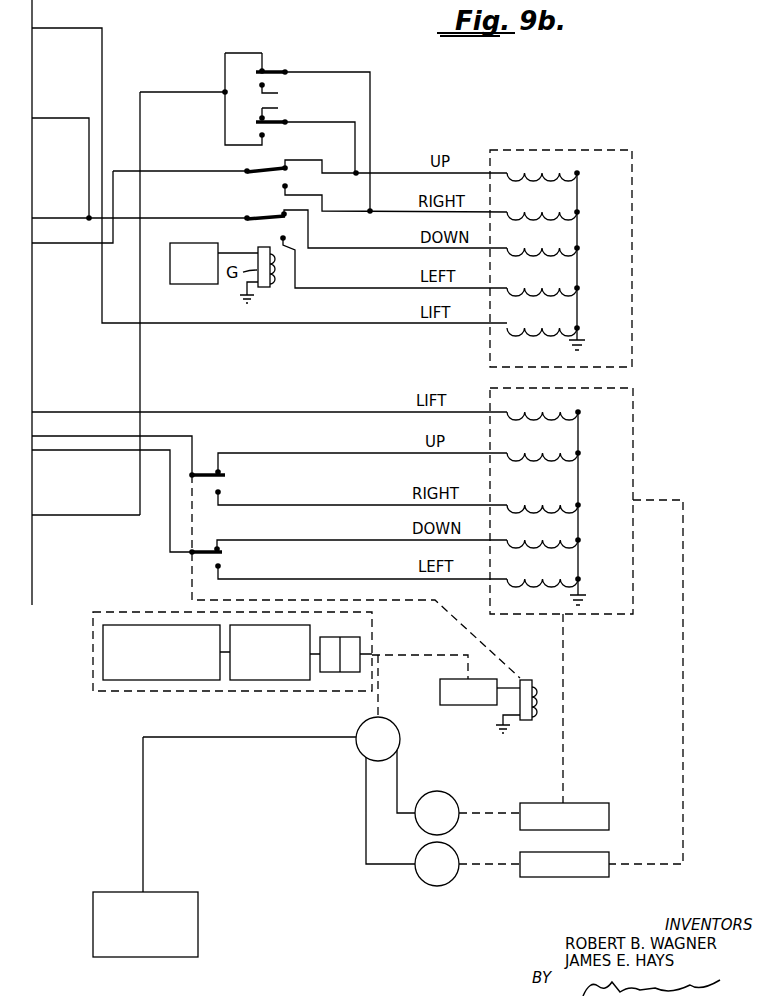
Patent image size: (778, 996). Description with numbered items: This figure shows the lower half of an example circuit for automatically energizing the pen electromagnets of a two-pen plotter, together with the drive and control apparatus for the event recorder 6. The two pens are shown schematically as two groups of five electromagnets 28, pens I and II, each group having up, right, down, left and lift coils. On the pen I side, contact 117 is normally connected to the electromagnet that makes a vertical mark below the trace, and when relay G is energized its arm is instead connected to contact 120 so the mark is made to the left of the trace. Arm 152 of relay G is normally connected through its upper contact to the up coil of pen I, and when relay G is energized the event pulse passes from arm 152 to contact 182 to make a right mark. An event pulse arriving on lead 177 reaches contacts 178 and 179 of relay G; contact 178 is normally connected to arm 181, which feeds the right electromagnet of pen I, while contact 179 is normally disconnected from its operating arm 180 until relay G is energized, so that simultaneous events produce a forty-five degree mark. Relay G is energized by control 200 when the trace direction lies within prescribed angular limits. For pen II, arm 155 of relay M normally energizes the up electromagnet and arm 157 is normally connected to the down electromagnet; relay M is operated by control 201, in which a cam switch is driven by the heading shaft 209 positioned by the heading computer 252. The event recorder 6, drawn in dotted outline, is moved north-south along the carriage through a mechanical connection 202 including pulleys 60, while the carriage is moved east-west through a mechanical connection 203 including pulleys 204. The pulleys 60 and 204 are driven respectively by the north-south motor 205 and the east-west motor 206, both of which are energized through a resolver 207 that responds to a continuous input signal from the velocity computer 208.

The event recorder 6 is at (633, 256).
The electromagnets 28 is at (556, 370).
The pulleys 60 is at (604, 803).
The contact 117 is at (250, 214).
The contact 120 is at (278, 238).
The arm of relay G 152 is at (274, 176).
The arm of relay M 155 is at (210, 470).
The arm of relay M 157 is at (200, 548).
The lead 177 is at (143, 397).
The contact of relay G 178 is at (265, 68).
The contact of relay G 179 is at (232, 146).
The operating arm 180 is at (280, 118).
The arm 181 is at (280, 67).
The contact 182 is at (289, 191).
The control 200 is at (193, 284).
The control 201 is at (496, 706).
The mechanical connection 202 is at (565, 726).
The mechanical connection 203 is at (686, 656).
The pulleys 204 is at (607, 877).
The north-south motor 205 is at (450, 795).
The east-west motor 206 is at (452, 882).
The resolver 207 is at (400, 741).
The velocity computer 208 is at (200, 908).
The heading shaft 209 is at (378, 708).
The heading computer 252 is at (147, 608).